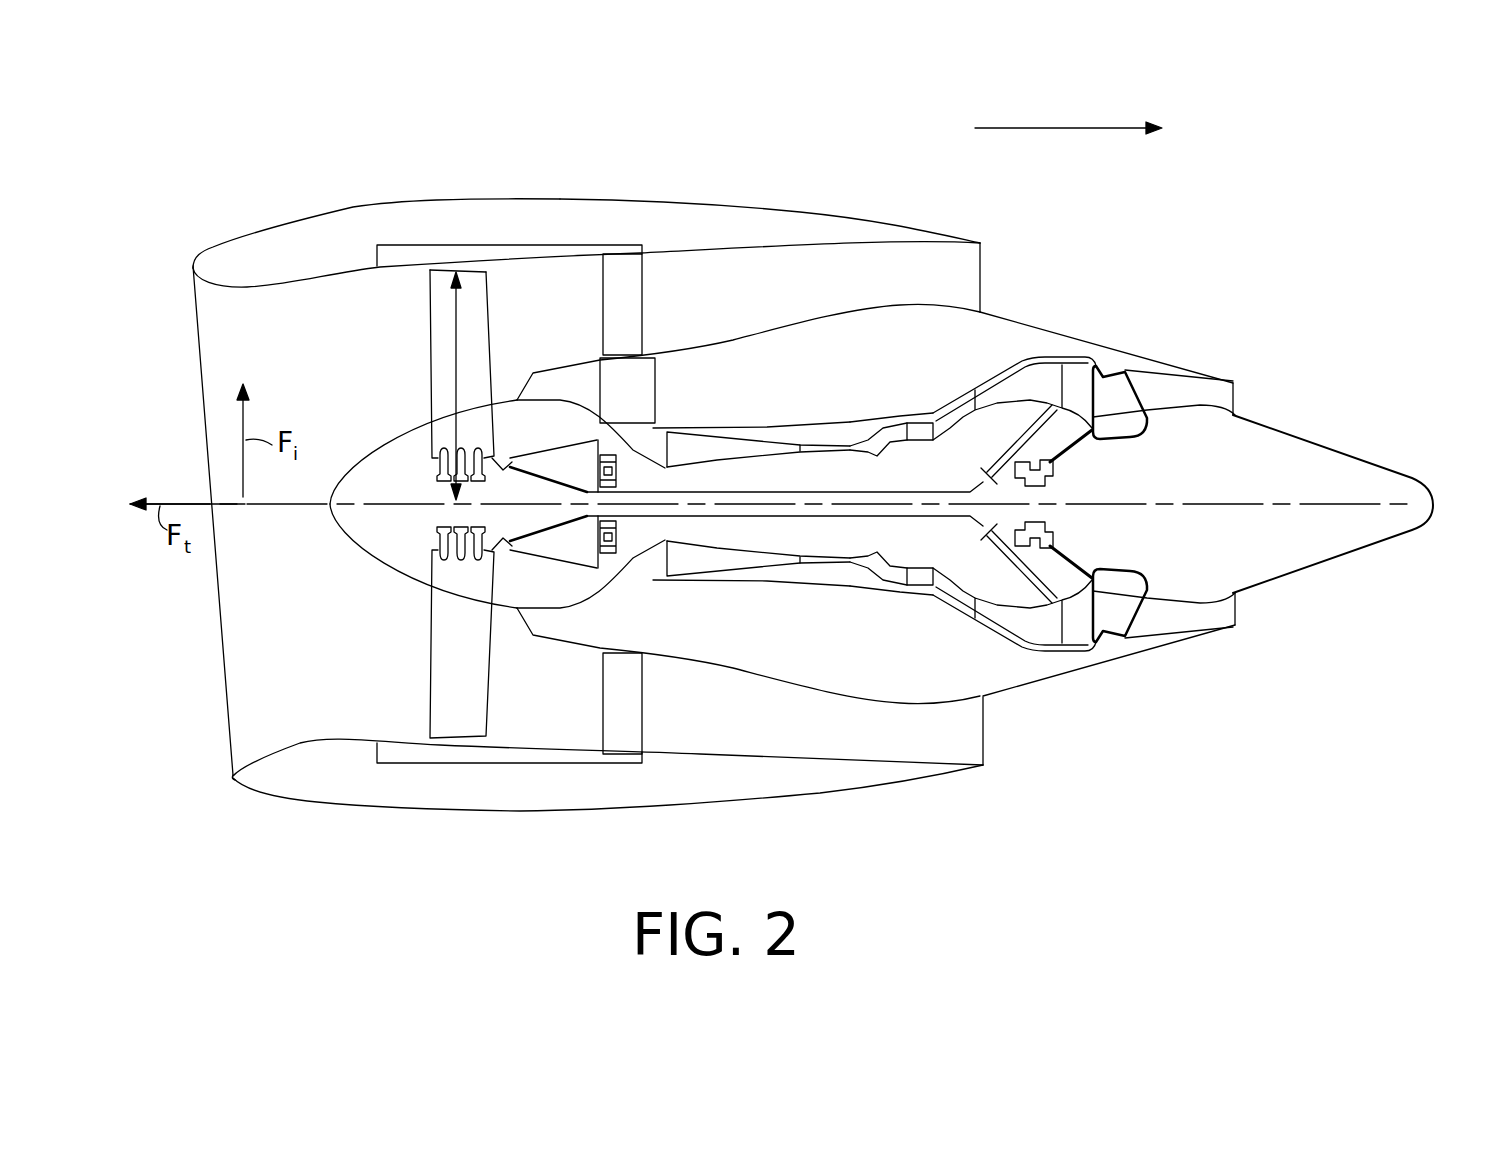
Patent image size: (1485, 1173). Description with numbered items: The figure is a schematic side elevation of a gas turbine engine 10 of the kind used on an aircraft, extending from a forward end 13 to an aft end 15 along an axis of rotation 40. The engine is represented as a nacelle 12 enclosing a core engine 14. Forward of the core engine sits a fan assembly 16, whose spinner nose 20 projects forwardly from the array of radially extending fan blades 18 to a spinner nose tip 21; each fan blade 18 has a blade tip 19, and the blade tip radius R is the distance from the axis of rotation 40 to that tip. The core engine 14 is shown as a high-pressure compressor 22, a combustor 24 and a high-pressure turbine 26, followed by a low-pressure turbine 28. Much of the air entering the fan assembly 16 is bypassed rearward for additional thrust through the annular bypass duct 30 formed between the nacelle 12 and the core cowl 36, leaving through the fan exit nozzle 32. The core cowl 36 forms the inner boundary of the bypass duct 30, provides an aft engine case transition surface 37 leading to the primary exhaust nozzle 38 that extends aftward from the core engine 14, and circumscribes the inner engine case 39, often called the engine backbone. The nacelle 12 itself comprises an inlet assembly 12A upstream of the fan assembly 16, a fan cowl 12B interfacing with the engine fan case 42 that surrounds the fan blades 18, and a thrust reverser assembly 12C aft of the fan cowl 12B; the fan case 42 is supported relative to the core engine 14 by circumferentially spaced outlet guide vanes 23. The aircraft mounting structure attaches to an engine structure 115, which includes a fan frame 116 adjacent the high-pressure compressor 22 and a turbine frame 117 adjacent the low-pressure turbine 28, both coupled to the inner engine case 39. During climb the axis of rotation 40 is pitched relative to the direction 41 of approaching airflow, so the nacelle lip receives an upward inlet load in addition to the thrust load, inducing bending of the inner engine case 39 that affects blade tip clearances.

The gas turbine engine 10 is at (200, 215).
The nacelle 12 is at (400, 155).
The inlet assembly 12A is at (352, 198).
The fan cowl 12B is at (561, 195).
The thrust reverser assembly 12C is at (856, 793).
The forward end 13 is at (198, 750).
The core engine 14 is at (1018, 675).
The aft end 15 is at (1366, 382).
The fan assembly 16 is at (457, 644).
The fan blades 18 is at (447, 341).
The blade tip 19 is at (427, 268).
The spinner nose 20 is at (383, 533).
The spinner nose tip 21 is at (329, 502).
The high-pressure compressor 22 is at (690, 433).
The outlet guide vanes 23 is at (622, 307).
The combustor 24 is at (877, 427).
The high-pressure turbine 26 is at (917, 580).
The low-pressure turbine 28 is at (1033, 380).
The bypass duct 30 is at (529, 303).
The fan exit nozzle 32 is at (1015, 731).
The core cowl 36 is at (803, 325).
The aft engine case transition surface 37 is at (1015, 320).
The primary exhaust nozzle 38 is at (1186, 642).
The inner engine case 39 is at (907, 417).
The axis of rotation 40 is at (1263, 504).
The direction of approaching airflow 41 is at (1068, 112).
The engine fan case 42 is at (410, 243).
The engine structure 115 is at (714, 325).
The fan frame 116 is at (647, 370).
The turbine frame 117 is at (1118, 392).
The blade tip radius R is at (456, 360).